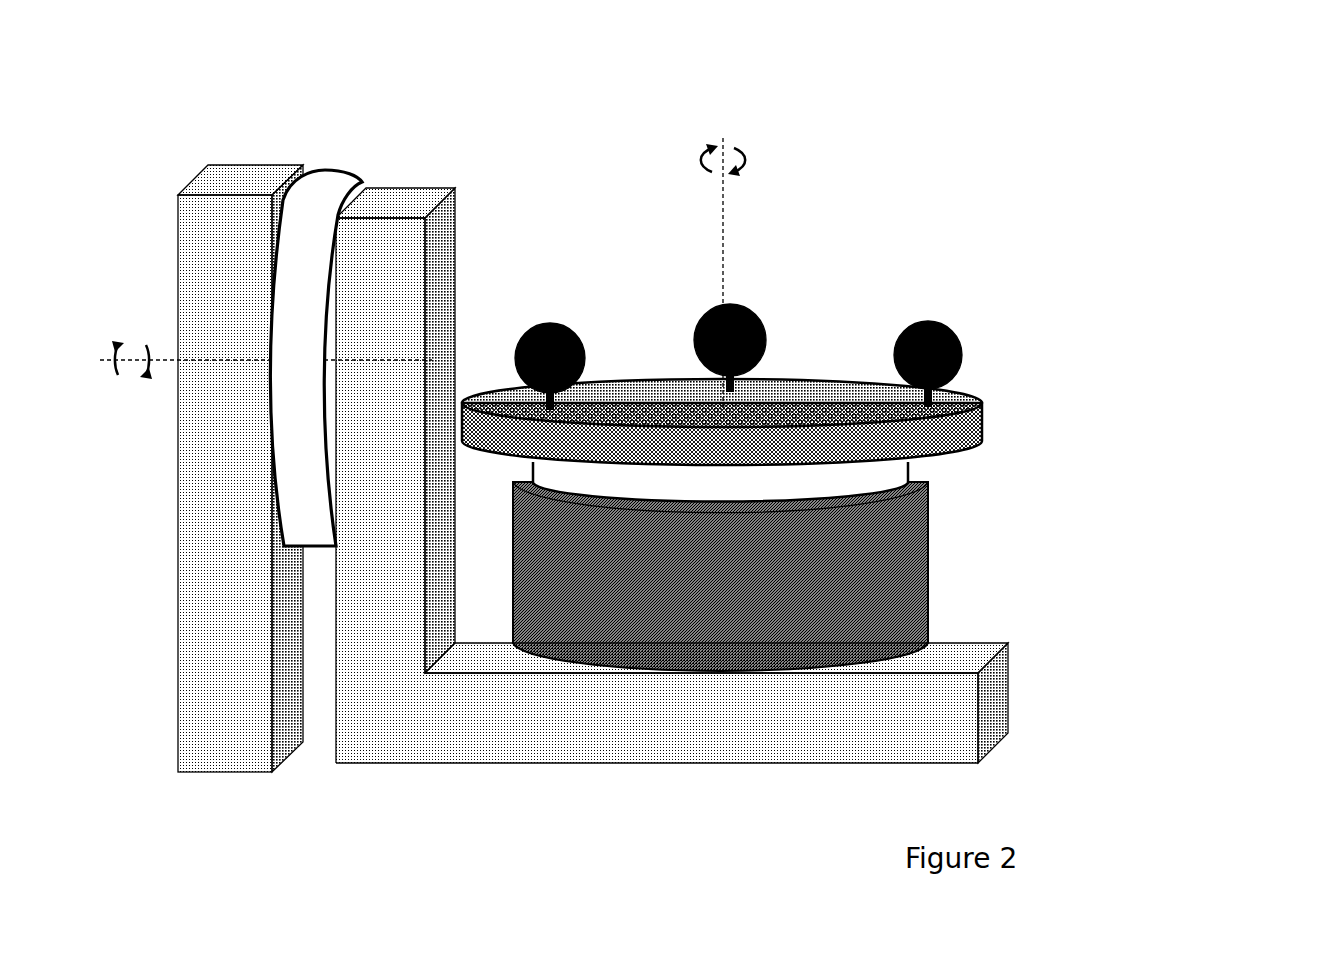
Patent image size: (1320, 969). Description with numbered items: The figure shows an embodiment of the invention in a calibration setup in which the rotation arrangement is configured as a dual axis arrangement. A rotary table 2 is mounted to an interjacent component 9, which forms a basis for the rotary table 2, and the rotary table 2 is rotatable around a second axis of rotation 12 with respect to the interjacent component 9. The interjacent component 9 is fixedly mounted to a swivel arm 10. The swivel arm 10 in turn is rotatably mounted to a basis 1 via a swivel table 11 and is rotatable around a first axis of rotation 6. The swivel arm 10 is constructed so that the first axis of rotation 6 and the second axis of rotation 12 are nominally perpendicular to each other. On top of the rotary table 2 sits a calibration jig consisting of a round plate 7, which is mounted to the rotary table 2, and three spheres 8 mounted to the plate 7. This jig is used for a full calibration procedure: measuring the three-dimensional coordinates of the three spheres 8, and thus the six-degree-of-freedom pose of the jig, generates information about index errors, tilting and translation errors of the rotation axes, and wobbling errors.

The basis 1 is at (379, 395).
The swivel table 11 is at (443, 316).
The first axis of rotation 6 is at (480, 475).
The second axis of rotation 12 is at (858, 274).
The spheres 8 is at (865, 330).
The round plate 7 is at (856, 391).
The rotary table 2 is at (855, 442).
The interjacent component 9 is at (856, 573).
The swivel arm 10 is at (821, 688).